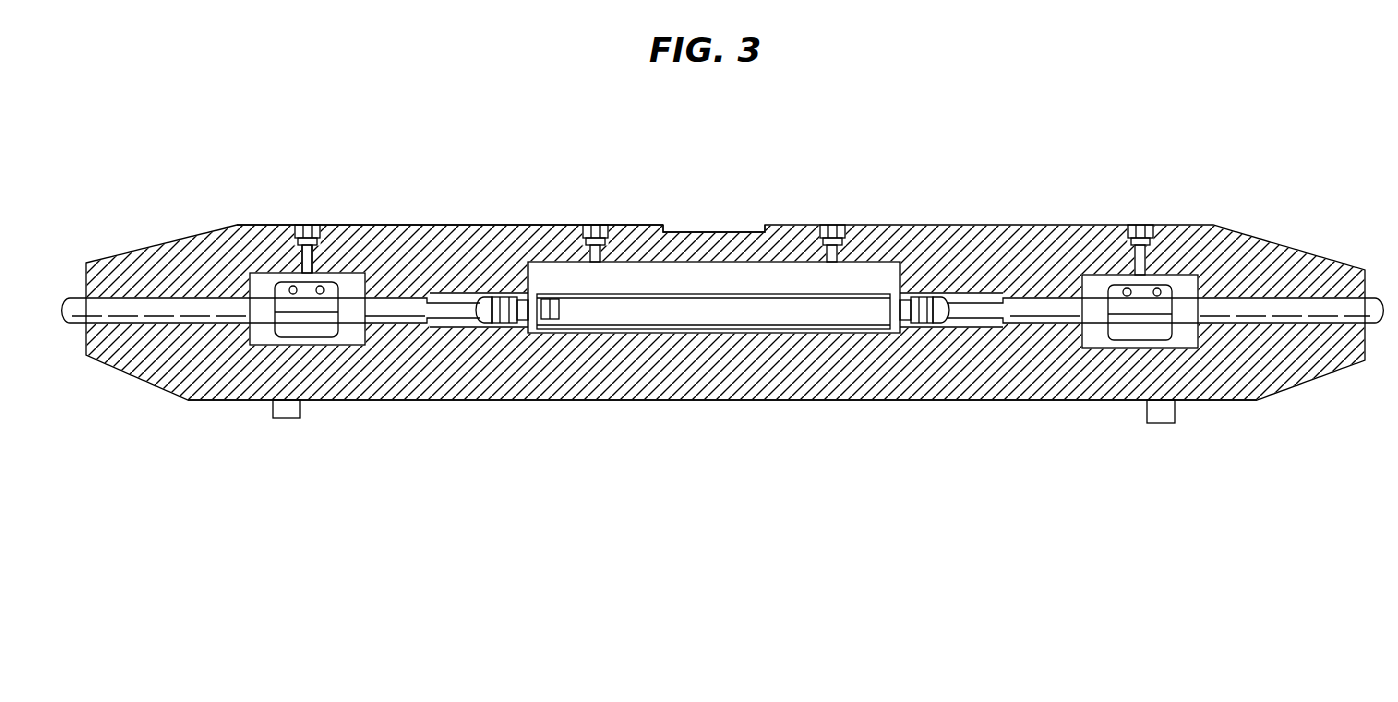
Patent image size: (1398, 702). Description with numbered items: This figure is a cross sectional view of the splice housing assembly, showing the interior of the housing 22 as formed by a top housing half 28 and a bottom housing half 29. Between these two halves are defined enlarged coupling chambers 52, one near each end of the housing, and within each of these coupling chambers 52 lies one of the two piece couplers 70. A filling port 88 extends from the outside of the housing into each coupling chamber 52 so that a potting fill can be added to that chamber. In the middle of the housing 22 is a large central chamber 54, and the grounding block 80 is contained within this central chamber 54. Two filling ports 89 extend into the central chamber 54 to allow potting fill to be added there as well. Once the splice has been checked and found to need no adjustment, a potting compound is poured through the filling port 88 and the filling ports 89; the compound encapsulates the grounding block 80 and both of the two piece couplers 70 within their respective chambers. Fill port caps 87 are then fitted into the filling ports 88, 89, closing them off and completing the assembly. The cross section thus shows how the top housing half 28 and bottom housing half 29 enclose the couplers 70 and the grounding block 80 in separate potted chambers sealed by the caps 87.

The housing 22 is at (1008, 220).
The top housing half 28 is at (352, 230).
The bottom housing half 29 is at (432, 383).
The coupling chambers 52 is at (267, 341).
The central chamber 54 is at (876, 272).
The two piece couplers 70 is at (315, 330).
The grounding block 80 is at (670, 318).
The fill port caps 87 is at (305, 224).
The filling port 88 is at (303, 262).
The filling ports 89 is at (602, 248).